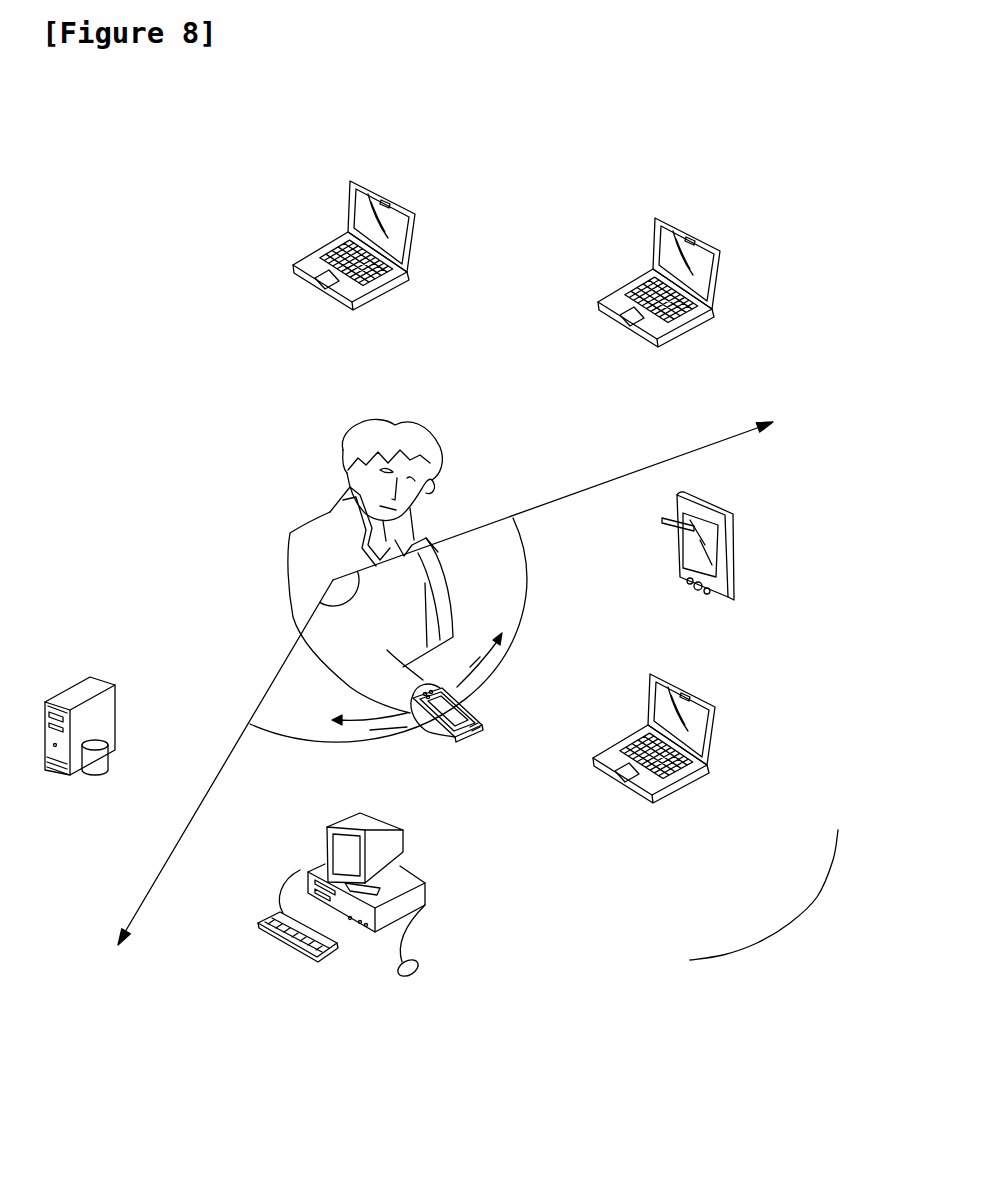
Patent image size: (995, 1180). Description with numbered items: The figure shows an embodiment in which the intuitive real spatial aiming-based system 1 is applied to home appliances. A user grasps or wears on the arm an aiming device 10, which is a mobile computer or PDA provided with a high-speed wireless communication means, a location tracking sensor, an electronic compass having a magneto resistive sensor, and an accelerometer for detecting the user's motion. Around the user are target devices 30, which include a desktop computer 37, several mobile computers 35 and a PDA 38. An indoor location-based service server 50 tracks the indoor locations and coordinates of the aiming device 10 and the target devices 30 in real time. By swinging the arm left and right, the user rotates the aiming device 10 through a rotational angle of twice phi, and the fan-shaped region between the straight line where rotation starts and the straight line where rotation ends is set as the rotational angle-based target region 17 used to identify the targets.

The intuitive real spatial aiming-based system 1 is at (718, 155).
The aiming device 10 is at (473, 733).
The rotational angle-based target region 17 is at (493, 548).
The target devices 30 is at (764, 896).
The mobile computer 35 is at (393, 194).
The desktop computer 37 is at (427, 892).
The PDA 38 is at (722, 603).
The indoor location-based service server 50 is at (117, 720).